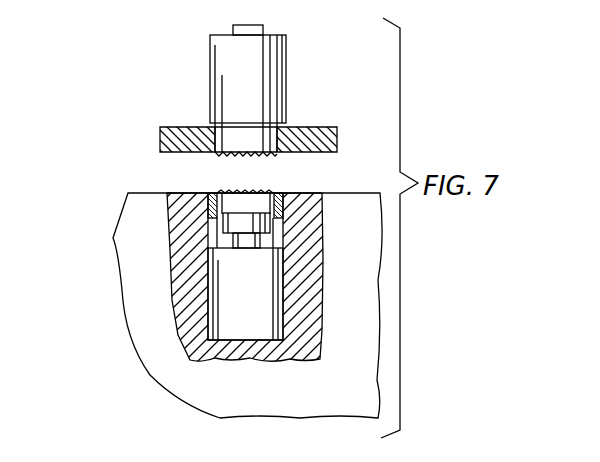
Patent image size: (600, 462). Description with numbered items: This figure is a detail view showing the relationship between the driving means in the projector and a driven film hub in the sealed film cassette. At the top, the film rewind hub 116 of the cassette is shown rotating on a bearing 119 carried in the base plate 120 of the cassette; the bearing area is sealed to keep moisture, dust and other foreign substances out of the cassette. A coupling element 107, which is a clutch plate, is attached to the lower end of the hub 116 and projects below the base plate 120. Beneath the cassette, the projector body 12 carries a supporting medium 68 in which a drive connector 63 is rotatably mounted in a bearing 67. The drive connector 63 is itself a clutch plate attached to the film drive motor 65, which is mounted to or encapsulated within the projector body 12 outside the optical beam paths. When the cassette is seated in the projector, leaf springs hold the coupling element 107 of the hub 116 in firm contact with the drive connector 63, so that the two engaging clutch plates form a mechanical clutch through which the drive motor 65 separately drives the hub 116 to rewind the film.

The projector body 12 is at (138, 300).
The drive connector 63 is at (228, 190).
The film drive motor 65 is at (255, 289).
The bearing 67 is at (283, 196).
The supporting medium 68 is at (168, 223).
The coupling element 107 is at (262, 158).
The film rewind hub 116 is at (230, 55).
The bearing 119 is at (236, 130).
The base plate 120 is at (160, 140).